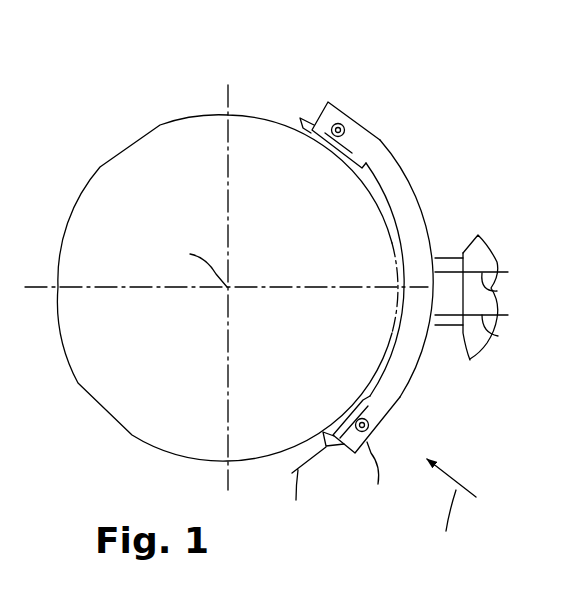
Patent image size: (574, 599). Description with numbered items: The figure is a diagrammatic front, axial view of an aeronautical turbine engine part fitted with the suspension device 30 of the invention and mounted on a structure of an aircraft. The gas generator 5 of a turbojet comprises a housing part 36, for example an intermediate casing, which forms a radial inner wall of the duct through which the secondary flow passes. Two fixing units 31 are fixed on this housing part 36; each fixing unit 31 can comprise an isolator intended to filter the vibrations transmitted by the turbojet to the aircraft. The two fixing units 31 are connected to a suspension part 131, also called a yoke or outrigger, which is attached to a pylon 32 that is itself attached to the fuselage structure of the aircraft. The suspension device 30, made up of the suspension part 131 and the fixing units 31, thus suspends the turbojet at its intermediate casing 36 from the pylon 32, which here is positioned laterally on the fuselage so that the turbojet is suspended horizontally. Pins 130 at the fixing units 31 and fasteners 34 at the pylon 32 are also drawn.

The gas generator 5 is at (109, 130).
The housing part 36 is at (190, 114).
The suspension device 30 is at (410, 118).
The suspension part 131 is at (418, 202).
The fixing unit 31 is at (318, 108).
The pivot pin 130 is at (358, 137).
The pylon 32 is at (494, 347).
The fastening screw 34 is at (508, 272).